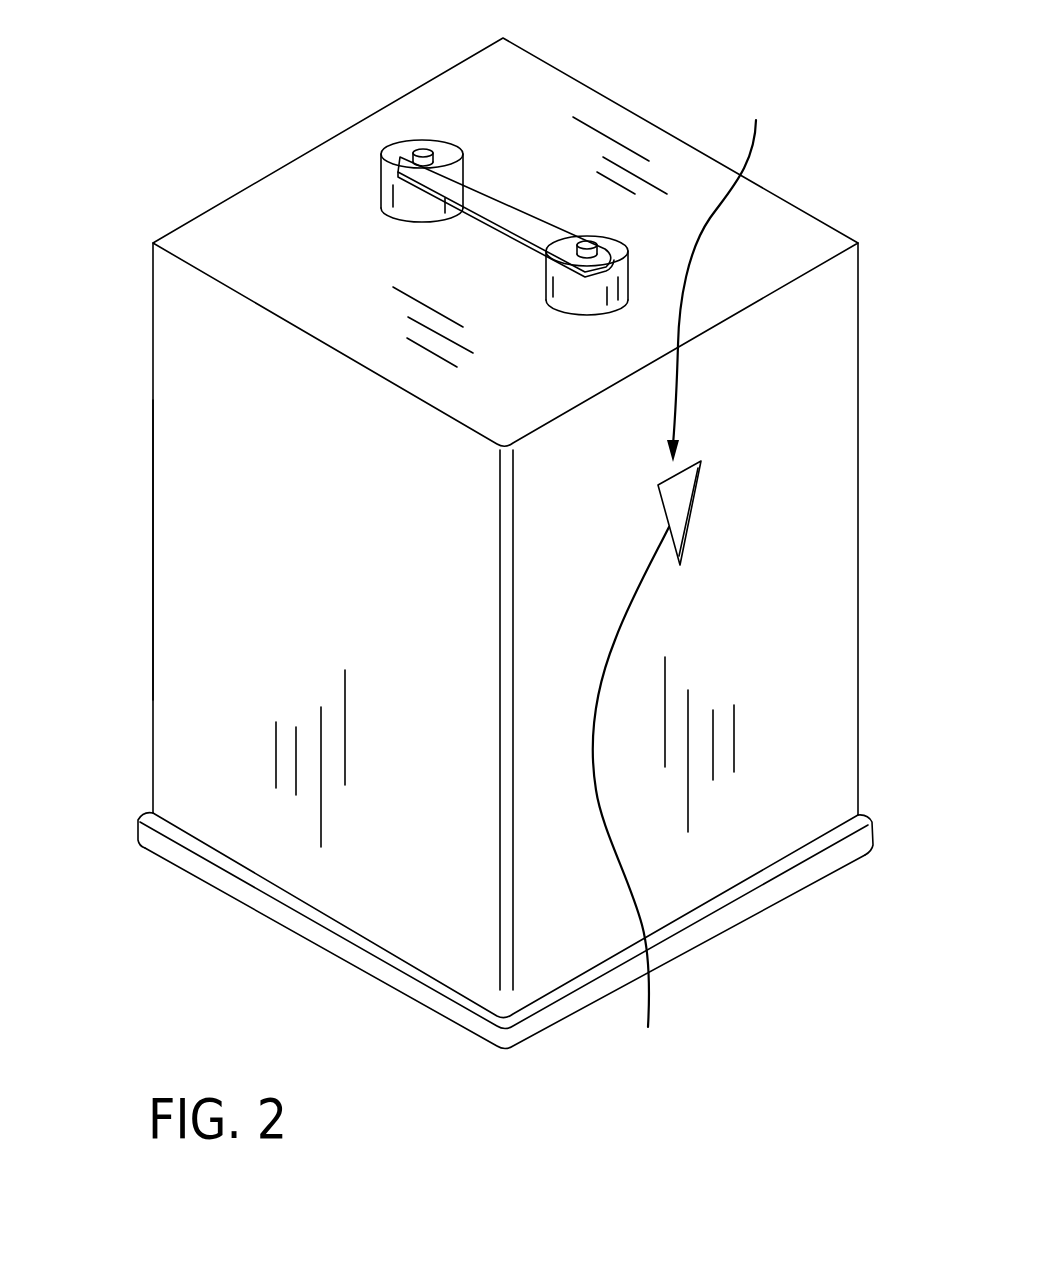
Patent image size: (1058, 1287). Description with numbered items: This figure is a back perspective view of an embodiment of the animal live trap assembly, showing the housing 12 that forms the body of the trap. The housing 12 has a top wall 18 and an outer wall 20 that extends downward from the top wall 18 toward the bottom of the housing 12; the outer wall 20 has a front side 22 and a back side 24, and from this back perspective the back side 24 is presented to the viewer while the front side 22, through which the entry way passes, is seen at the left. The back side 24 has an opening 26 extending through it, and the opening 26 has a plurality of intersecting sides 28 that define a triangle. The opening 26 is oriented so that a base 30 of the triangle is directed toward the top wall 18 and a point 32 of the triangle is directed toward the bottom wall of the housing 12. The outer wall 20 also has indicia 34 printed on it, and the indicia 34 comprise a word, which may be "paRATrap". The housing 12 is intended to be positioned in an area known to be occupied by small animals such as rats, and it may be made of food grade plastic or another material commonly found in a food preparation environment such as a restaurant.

The housing 12 is at (153, 245).
The top wall 18 is at (305, 180).
The outer wall 20 is at (190, 353).
The front side 22 is at (153, 530).
The back side 24 is at (720, 838).
The opening 26 is at (707, 497).
The intersecting sides 28 is at (690, 470).
The base 30 is at (722, 269).
The point 32 is at (686, 597).
The indicia 34 is at (262, 575).